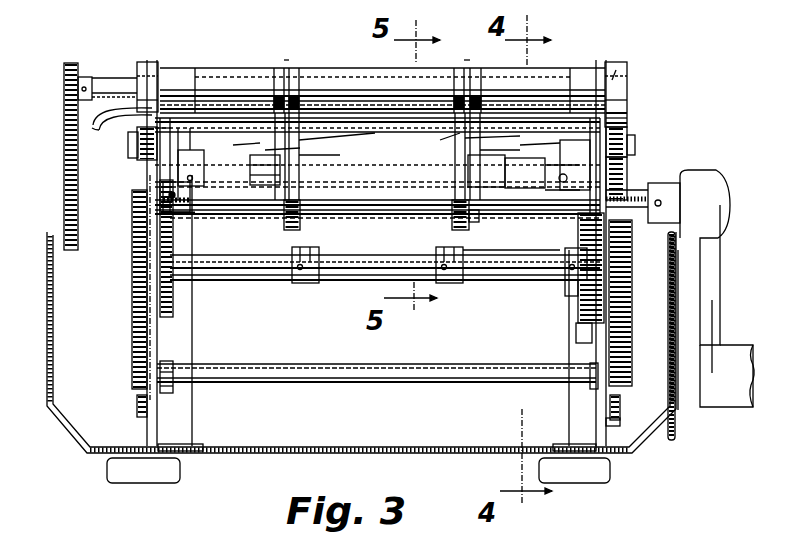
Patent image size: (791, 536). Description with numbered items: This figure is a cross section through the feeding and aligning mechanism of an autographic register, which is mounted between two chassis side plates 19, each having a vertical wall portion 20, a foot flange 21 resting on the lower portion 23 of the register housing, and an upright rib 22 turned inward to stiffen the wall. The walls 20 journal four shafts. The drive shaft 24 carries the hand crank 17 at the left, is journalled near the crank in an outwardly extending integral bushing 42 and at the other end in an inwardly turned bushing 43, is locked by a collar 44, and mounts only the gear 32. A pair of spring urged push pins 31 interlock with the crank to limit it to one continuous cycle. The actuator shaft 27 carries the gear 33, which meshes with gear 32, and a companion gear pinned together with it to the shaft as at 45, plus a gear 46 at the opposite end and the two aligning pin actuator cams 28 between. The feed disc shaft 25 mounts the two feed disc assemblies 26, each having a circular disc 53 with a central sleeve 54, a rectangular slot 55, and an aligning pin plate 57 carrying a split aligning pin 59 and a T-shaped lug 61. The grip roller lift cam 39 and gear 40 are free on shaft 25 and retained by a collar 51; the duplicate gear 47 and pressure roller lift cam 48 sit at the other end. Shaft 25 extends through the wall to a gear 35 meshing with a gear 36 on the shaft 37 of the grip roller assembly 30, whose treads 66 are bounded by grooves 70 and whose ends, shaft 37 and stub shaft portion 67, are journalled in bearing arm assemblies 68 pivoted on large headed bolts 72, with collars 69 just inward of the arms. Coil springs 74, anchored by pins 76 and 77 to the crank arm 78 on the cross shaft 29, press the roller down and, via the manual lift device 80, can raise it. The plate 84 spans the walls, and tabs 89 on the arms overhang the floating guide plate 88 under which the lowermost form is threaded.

The hand crank 17 is at (716, 322).
The chassis side plates 19 is at (158, 446).
The vertical wall portion 20 is at (158, 352).
The foot flange 21 is at (200, 445).
The upright rib 22 is at (176, 366).
The lower portion of the register housing 23 is at (234, 460).
The drive shaft 24 is at (404, 220).
The feed disc shaft 25 is at (392, 172).
The feed disc assemblies 26 is at (300, 156).
The actuator shaft 27 is at (502, 262).
The aligning pin actuator cams 28 is at (304, 248).
The cross shaft 29 is at (477, 366).
The grip roller assembly 30 is at (255, 57).
The spring urged push pins 31 is at (690, 360).
The gear 32 is at (578, 240).
The gear 33 is at (578, 332).
The gear 35 is at (64, 207).
The gear 36 is at (64, 92).
The shaft 37 is at (110, 80).
The grip roller lift cam 39 is at (262, 145).
The gear 40 is at (562, 152).
The bushing 42 is at (636, 180).
The bushing 43 is at (180, 215).
The collar 44 is at (190, 218).
The pin 45 is at (566, 288).
The gear 46 is at (174, 312).
The gear 47 is at (172, 148).
The pressure roller lift cam 48 is at (204, 158).
The collar 51 is at (560, 175).
The circular disc 53 is at (486, 170).
The sleeve 54 is at (516, 160).
The rectangular radially disposed slot 55 is at (282, 150).
The aligning pin plate 57 is at (300, 160).
The split aligning pin 59 is at (480, 110).
The T-shaped lug 61 is at (284, 232).
The treads 66 is at (286, 68).
The stub shaft portion 67 is at (627, 76).
The bearing arm assemblies 68 is at (146, 62).
The sleeve or collar 69 is at (186, 71).
The grooves 70 is at (279, 68).
The large headed bolt 72 is at (128, 150).
The coil springs 74 is at (132, 288).
The pin 76 is at (122, 409).
The pin 77 is at (620, 410).
The crank arm 78 is at (612, 428).
The manual lift device 80 is at (147, 325).
The plate 84 is at (376, 134).
The guide plate 88 is at (452, 130).
The tabs 89 is at (627, 113).